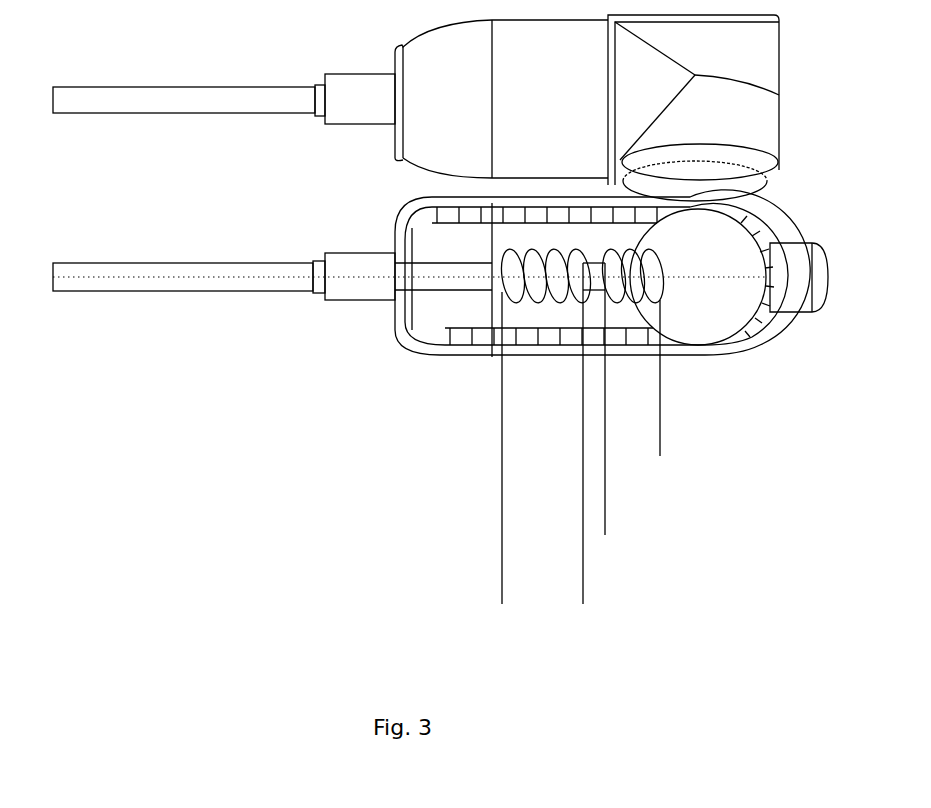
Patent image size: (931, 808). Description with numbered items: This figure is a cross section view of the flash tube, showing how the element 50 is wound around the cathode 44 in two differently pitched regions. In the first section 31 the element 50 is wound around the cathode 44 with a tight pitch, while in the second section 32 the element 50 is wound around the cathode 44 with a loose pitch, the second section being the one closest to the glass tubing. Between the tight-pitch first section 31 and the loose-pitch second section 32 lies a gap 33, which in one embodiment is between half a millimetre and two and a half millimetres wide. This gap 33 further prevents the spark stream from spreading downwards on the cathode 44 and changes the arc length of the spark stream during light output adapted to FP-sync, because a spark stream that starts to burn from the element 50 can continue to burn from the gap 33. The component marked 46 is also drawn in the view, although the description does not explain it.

The connector assembly 46 is at (400, 157).
The cathode 44 is at (423, 238).
The element 50 is at (517, 252).
The first section 31 is at (502, 597).
The second section 32 is at (565, 449).
The gap 33 is at (545, 528).